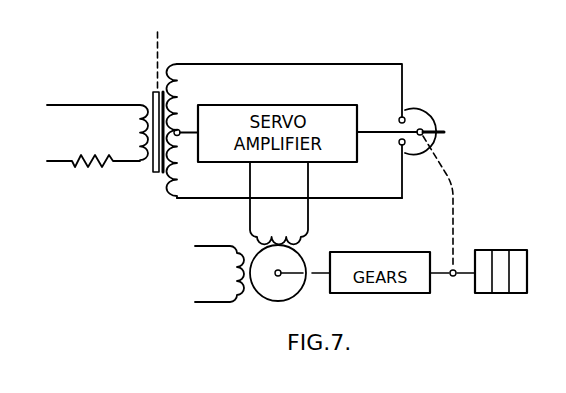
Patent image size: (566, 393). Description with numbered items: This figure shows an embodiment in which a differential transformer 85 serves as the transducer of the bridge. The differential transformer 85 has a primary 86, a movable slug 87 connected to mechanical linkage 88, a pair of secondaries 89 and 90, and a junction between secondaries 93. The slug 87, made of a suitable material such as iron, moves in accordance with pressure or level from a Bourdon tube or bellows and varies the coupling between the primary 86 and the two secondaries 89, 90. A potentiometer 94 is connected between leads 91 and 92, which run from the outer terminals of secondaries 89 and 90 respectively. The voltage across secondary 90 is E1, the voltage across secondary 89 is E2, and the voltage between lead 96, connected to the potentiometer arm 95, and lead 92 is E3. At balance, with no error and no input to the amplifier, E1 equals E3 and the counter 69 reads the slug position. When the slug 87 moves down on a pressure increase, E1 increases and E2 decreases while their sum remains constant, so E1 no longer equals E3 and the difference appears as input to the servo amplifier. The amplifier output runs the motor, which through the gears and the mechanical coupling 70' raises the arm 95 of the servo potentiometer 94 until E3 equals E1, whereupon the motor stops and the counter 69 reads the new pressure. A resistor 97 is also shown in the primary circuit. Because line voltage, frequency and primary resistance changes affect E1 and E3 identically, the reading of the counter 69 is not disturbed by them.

The differential transformer 85 is at (130, 131).
The primary 86 is at (141, 130).
The movable slug 87 is at (155, 173).
The mechanical linkage 88 is at (158, 52).
The secondary 89 is at (183, 88).
The secondary 90 is at (180, 192).
The lead 91 is at (303, 64).
The lead 92 is at (232, 199).
The junction between secondaries 93 is at (193, 134).
The potentiometer 94 is at (432, 110).
The potentiometer arm 95 is at (445, 132).
The lead 96 is at (375, 131).
The resistor 97 is at (88, 166).
The mechanical coupling 70' is at (462, 206).
The counting or indicating device 69 is at (503, 250).